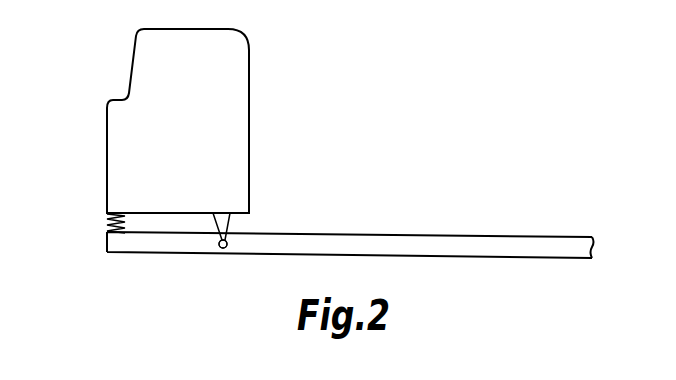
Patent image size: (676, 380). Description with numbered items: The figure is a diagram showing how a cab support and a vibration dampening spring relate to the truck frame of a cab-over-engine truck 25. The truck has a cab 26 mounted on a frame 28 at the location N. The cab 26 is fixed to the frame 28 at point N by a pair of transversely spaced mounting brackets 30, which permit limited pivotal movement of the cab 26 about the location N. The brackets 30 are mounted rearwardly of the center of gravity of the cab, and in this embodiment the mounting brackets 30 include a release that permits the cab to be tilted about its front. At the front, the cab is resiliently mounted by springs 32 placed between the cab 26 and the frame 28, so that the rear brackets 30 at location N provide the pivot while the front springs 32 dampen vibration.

The cab-over-engine truck 25 is at (116, 68).
The cab 26 is at (235, 115).
The frame 28 is at (402, 238).
The mounting brackets 30 is at (230, 225).
The springs 32 is at (107, 218).
The location N is at (222, 248).